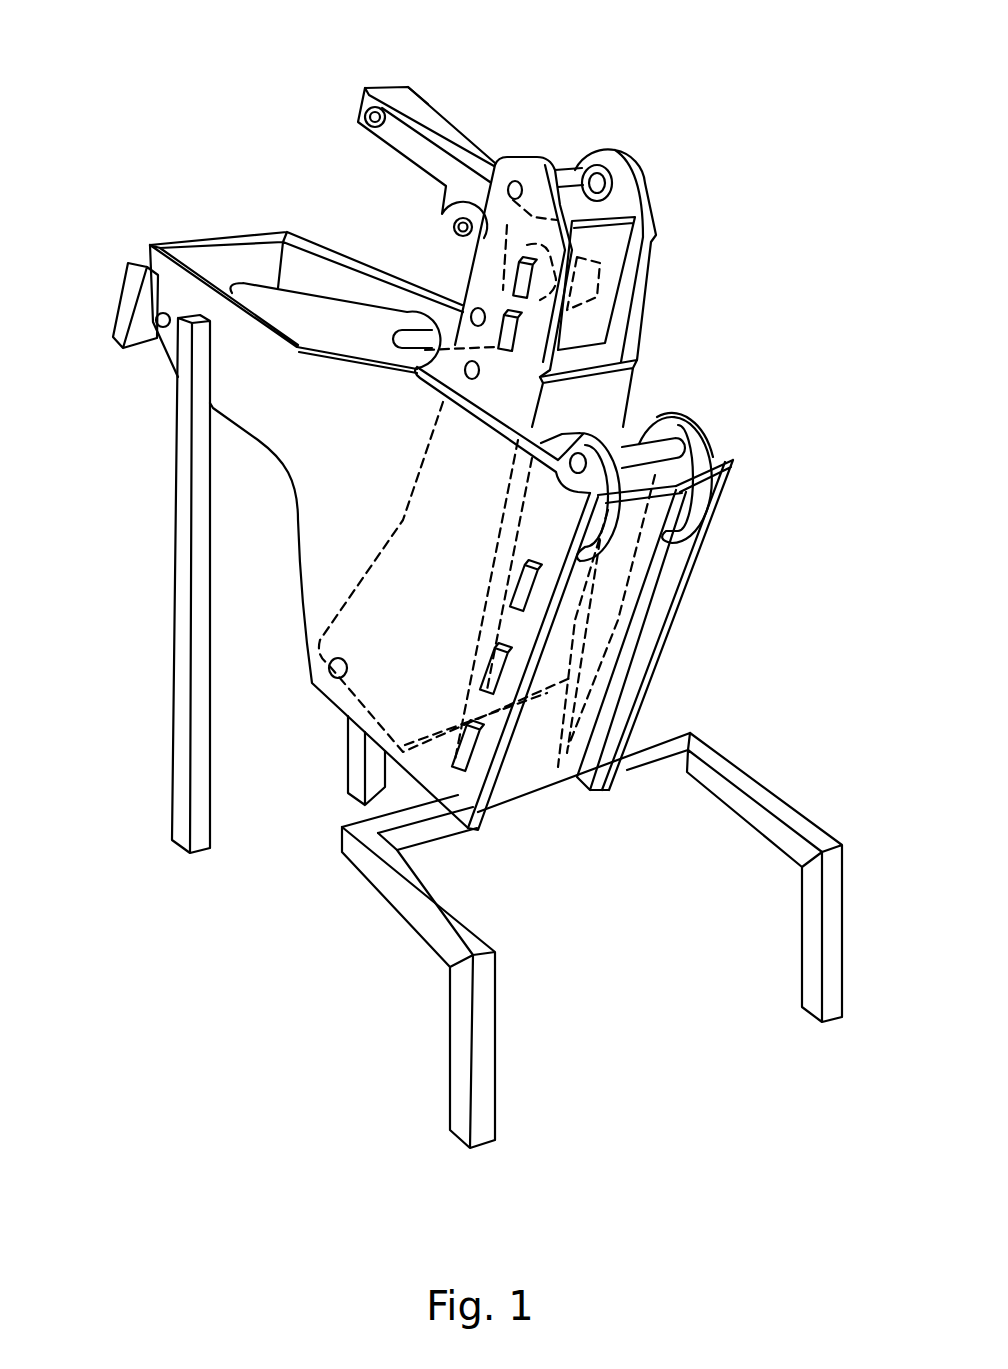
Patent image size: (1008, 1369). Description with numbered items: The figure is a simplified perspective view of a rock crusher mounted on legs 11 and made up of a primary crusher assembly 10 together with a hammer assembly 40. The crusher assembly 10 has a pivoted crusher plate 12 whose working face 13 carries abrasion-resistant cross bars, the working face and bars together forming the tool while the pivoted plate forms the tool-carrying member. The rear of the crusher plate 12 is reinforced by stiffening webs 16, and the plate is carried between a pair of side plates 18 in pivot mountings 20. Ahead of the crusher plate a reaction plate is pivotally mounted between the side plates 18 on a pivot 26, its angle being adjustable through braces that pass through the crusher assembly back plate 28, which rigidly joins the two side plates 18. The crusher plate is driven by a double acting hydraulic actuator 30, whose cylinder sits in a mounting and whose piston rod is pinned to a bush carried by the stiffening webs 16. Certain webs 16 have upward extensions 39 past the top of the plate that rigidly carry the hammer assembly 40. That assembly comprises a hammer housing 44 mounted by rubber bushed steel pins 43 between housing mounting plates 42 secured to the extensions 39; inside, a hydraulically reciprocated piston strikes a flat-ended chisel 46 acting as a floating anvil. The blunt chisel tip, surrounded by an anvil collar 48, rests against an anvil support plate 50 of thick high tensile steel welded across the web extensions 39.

The primary crusher assembly 10 is at (695, 390).
The legs 11 is at (357, 773).
The crusher plate 12 is at (540, 398).
The working face 13 is at (645, 388).
The stiffening webs 16 is at (413, 507).
The side plates 18 is at (320, 558).
The pivot mountings 20 is at (329, 668).
The pivot 26 is at (645, 436).
The crusher assembly back plate 28 is at (618, 645).
The double acting hydraulic actuator 30 is at (350, 318).
The upward extensions 39 is at (480, 283).
The hammer assembly 40 is at (490, 122).
The housing mounting plates 42 is at (433, 105).
The rubber bushed steel pins 43 is at (366, 116).
The hammer housing 44 is at (398, 88).
The chisel 46 is at (503, 514).
The anvil collar 48 is at (592, 305).
The anvil support plate 50 is at (613, 256).